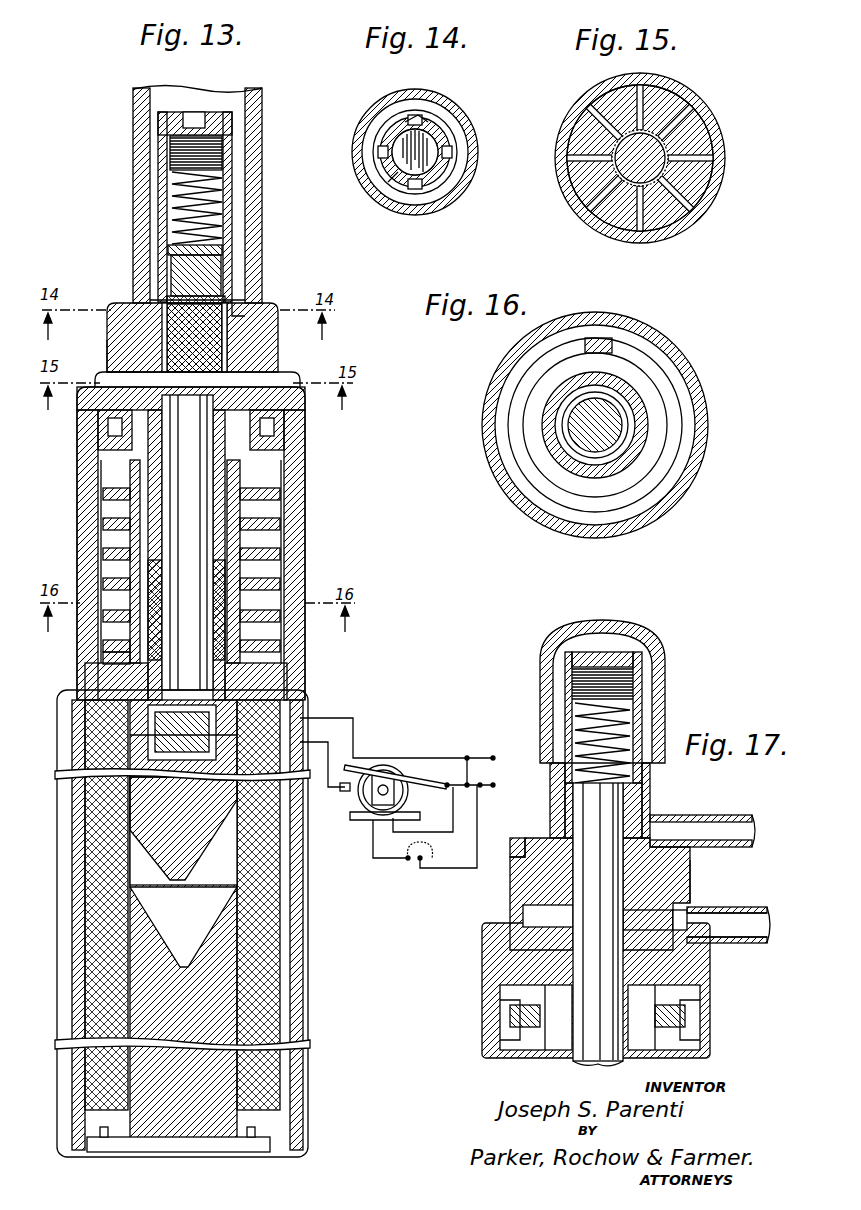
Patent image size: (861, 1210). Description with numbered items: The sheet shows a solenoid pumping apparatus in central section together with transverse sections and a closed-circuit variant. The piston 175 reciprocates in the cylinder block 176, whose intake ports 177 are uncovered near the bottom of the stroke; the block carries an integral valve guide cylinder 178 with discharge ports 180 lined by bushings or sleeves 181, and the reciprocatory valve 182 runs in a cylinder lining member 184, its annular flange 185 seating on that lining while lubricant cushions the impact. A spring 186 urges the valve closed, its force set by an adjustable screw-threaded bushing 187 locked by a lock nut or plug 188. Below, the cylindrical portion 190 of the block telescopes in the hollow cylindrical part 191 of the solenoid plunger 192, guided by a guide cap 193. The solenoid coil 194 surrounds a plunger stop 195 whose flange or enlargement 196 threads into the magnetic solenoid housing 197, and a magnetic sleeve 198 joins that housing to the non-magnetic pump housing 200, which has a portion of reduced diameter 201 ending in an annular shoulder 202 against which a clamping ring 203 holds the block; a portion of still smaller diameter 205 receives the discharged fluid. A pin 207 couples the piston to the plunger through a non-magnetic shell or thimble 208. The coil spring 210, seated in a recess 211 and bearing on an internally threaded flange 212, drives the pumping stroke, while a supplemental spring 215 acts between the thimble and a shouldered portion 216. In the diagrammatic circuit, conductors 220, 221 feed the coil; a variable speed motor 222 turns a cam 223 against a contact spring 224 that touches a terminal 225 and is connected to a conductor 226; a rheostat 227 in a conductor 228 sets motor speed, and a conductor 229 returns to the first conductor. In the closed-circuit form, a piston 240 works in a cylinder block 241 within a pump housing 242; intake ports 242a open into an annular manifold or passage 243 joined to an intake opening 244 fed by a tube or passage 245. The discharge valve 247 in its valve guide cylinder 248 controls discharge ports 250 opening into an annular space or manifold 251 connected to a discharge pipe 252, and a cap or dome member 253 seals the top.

In FIG. 13, the piston 175 is at (240, 355).
In FIG. 15, the piston 175 is at (618, 168).
In FIG. 16, the piston 175 is at (610, 436).
In FIG. 13, the cylinder block 176 is at (240, 316).
In FIG. 13, the intake ports 177 is at (197, 384).
In FIG. 15, the intake ports 177 is at (725, 150).
In FIG. 13, the valve guide cylinder 178 is at (236, 190).
In FIG. 14, the valve guide cylinder 178 is at (440, 128).
In FIG. 13, the discharge ports 180 is at (222, 305).
In FIG. 14, the discharge ports 180 is at (448, 152).
In FIG. 13, the bushings or sleeves 181 is at (227, 310).
In FIG. 14, the bushings or sleeves 181 is at (425, 120).
In FIG. 13, the reciprocatory valve 182 is at (167, 284).
In FIG. 14, the reciprocatory valve 182 is at (392, 178).
In FIG. 13, the cylinder lining member 184 is at (171, 268).
In FIG. 14, the cylinder lining member 184 is at (398, 128).
In FIG. 15, the cylinder lining member 184 is at (690, 222).
In FIG. 13, the annular flange 185 is at (168, 250).
In FIG. 13, the spring 186 is at (230, 225).
In FIG. 13, the adjustable screw-threaded bushing 187 is at (215, 155).
In FIG. 13, the lock nut or plug 188 is at (165, 128).
In FIG. 13, the cylindrical portion 190 is at (130, 517).
In FIG. 16, the cylindrical portion 190 is at (560, 490).
In FIG. 13, the hollow cylindrical part 191 is at (226, 568).
In FIG. 16, the hollow cylindrical part 191 is at (640, 465).
In FIG. 13, the solenoid plunger 192 is at (170, 840).
In FIG. 13, the guide cap 193 is at (105, 450).
In FIG. 13, the solenoid coil 194 is at (88, 848).
In FIG. 13, the plunger stop 195 is at (165, 940).
In FIG. 13, the flange or enlargement 196 is at (82, 1125).
In FIG. 13, the solenoid housing 197 is at (292, 1057).
In FIG. 13, the sleeve 198 is at (288, 680).
In FIG. 13, the pump housing 200 is at (300, 483).
In FIG. 13, the portion of reduced diameter 201 is at (125, 352).
In FIG. 15, the portion of reduced diameter 201 is at (725, 185).
In FIG. 13, the annular shoulder 202 is at (135, 328).
In FIG. 13, the clamping ring 203 is at (272, 438).
In FIG. 13, the portion of still smaller diameter 205 is at (134, 188).
In FIG. 14, the portion of still smaller diameter 205 is at (445, 210).
In FIG. 13, the pin 207 is at (90, 725).
In FIG. 13, the shell or thimble 208 is at (90, 678).
In FIG. 13, the coil spring 210 is at (272, 525).
In FIG. 16, the coil spring 210 is at (598, 338).
In FIG. 13, the recess 211 is at (103, 655).
In FIG. 13, the internally threaded flange 212 is at (108, 480).
In FIG. 13, the spring 215 is at (226, 640).
In FIG. 16, the spring 215 is at (570, 438).
In FIG. 13, the shouldered portion 216 is at (165, 550).
In FIG. 13, the conductor 220 is at (355, 722).
In FIG. 13, the conductor 221 is at (350, 755).
In FIG. 13, the variable speed motor 222 is at (360, 828).
In FIG. 13, the cam 223 is at (395, 770).
In FIG. 13, the contact spring 224 is at (355, 768).
In FIG. 13, the terminal 225 is at (352, 790).
In FIG. 13, the conductor 226 is at (493, 783).
In FIG. 13, the rheostat 227 is at (415, 860).
In FIG. 13, the conductor 228 is at (478, 832).
In FIG. 13, the conductor 229 is at (440, 828).
In FIG. 17, the piston 240 is at (585, 1066).
In FIG. 17, the cylinder block 241 is at (655, 862).
In FIG. 17, the pump housing 242 is at (515, 905).
In FIG. 17, the intake ports 242a is at (523, 918).
In FIG. 17, the annular manifold or passage 243 is at (692, 880).
In FIG. 17, the intake opening 244 is at (676, 925).
In FIG. 17, the tube or passage 245 is at (735, 900).
In FIG. 17, the discharge valve 247 is at (583, 808).
In FIG. 17, the valve guide cylinder 248 is at (645, 796).
In FIG. 17, the discharge ports 250 is at (650, 828).
In FIG. 17, the annular space or manifold 251 is at (525, 850).
In FIG. 17, the discharge pipe 252 is at (750, 843).
In FIG. 17, the cap or dome member 253 is at (550, 635).